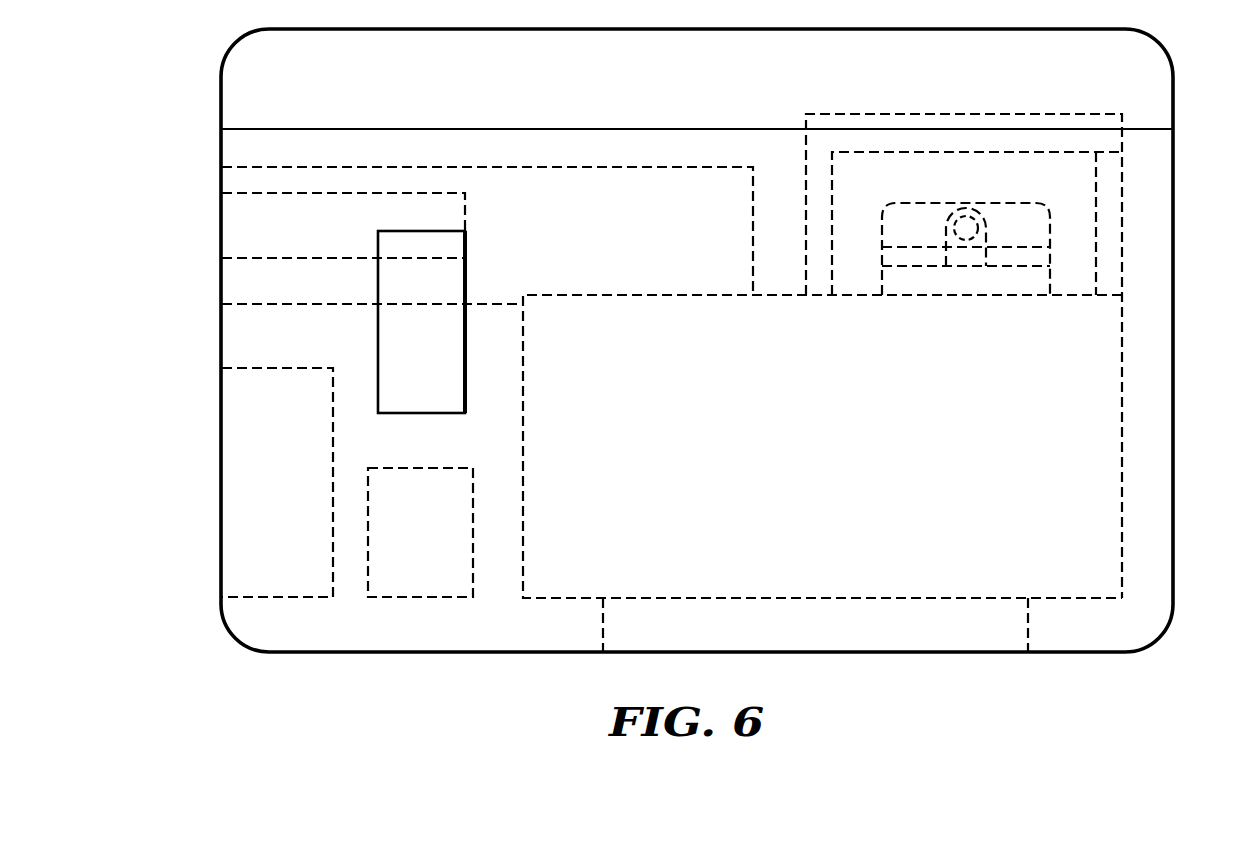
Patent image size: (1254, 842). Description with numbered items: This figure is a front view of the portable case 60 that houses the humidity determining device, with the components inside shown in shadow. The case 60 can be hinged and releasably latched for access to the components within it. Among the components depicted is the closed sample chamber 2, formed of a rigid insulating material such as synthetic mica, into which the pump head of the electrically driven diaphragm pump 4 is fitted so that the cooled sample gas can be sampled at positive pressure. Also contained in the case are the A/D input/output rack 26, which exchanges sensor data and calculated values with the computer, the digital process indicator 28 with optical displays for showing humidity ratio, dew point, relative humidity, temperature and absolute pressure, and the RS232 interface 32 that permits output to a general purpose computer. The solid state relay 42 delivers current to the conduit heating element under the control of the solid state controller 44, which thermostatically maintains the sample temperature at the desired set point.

The sample chamber 2 is at (1122, 212).
The diaphragm pump 4 is at (1045, 258).
The A/D input/output rack 26 is at (1110, 486).
The digital process indicator 28 is at (556, 182).
The RS232 interface 32 is at (243, 432).
The solid state relay 42 is at (433, 551).
The solid state controller 44 is at (225, 209).
The case 60 is at (1174, 326).